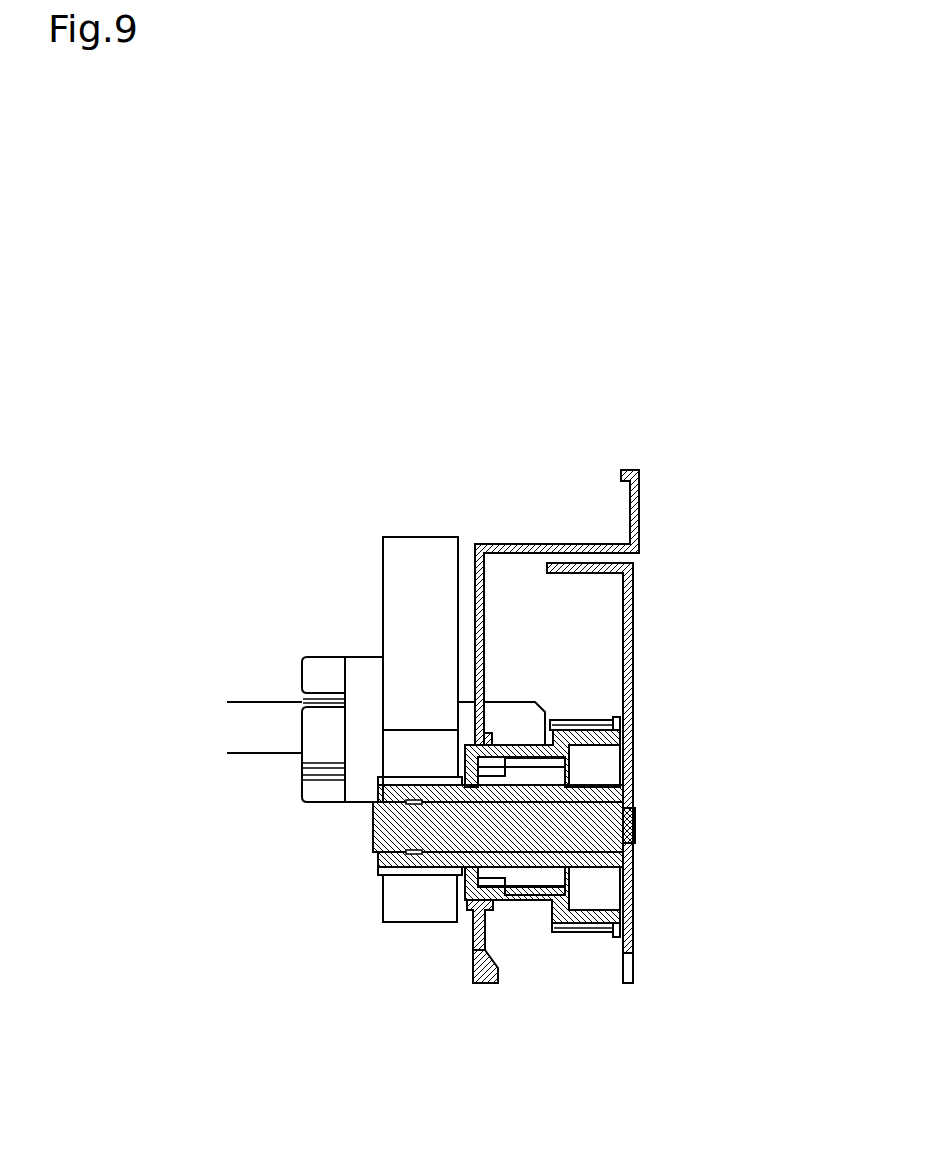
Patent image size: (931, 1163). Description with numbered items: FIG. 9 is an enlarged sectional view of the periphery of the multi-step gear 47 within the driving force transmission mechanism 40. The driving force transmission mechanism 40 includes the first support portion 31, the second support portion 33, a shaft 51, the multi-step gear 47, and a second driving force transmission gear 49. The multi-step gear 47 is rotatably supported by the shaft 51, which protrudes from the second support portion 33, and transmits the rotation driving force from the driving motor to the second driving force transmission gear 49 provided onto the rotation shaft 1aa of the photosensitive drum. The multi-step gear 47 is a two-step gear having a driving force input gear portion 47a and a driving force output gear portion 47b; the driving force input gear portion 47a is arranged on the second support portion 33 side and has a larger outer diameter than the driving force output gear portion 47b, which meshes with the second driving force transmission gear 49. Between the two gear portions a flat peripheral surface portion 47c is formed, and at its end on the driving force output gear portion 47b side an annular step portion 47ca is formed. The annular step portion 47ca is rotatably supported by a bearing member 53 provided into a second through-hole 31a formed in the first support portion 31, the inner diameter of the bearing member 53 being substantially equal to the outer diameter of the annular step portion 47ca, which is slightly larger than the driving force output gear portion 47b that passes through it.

The rotation shaft 1aa is at (258, 712).
The second driving force transmission gear 49 is at (412, 548).
The first support portion 31 is at (522, 545).
The second through-hole 31a is at (479, 922).
The second support portion 33 is at (633, 653).
The driving force transmission mechanism 40 is at (609, 690).
The multi-step gear 47 is at (573, 958).
The driving force input gear portion 47a is at (585, 935).
The driving force output gear portion 47b is at (418, 878).
The peripheral surface portion 47c is at (533, 910).
The annular step portion 47ca is at (471, 913).
The shaft 51 is at (385, 828).
The bearing member 53 is at (503, 973).